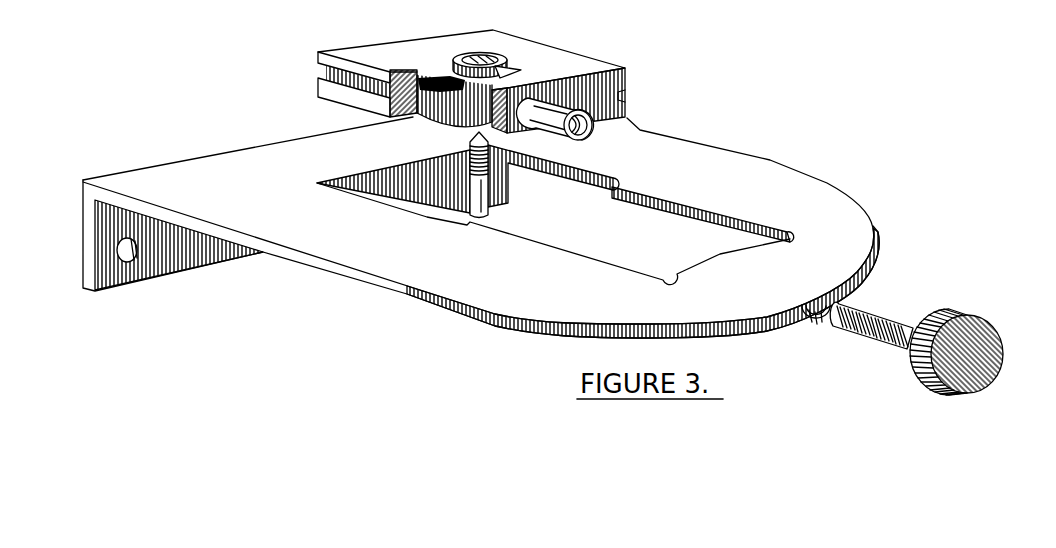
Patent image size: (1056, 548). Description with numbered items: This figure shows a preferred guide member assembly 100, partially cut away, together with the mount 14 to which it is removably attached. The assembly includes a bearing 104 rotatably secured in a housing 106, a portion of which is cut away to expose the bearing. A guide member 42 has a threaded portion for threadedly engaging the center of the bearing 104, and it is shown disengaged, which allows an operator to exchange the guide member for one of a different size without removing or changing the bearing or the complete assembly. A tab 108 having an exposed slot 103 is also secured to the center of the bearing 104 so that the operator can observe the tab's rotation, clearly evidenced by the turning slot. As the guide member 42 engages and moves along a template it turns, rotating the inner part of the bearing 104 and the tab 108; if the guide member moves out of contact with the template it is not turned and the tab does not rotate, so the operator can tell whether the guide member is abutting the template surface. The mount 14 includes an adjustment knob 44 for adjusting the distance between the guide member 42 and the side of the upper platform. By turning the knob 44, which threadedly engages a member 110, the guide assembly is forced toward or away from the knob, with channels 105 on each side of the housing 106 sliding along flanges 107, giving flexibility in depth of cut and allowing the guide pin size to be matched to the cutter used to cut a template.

The mount 14 is at (335, 248).
The guide member 42 is at (497, 203).
The adjustment knob 44 is at (1003, 345).
The guide member assembly 100 is at (487, 70).
The slot 103 is at (478, 56).
The bearing 104 is at (452, 73).
The channels 105 is at (330, 72).
The housing 106 is at (400, 48).
The flanges 107 is at (710, 213).
The tab 108 is at (497, 66).
The member 110 is at (594, 128).